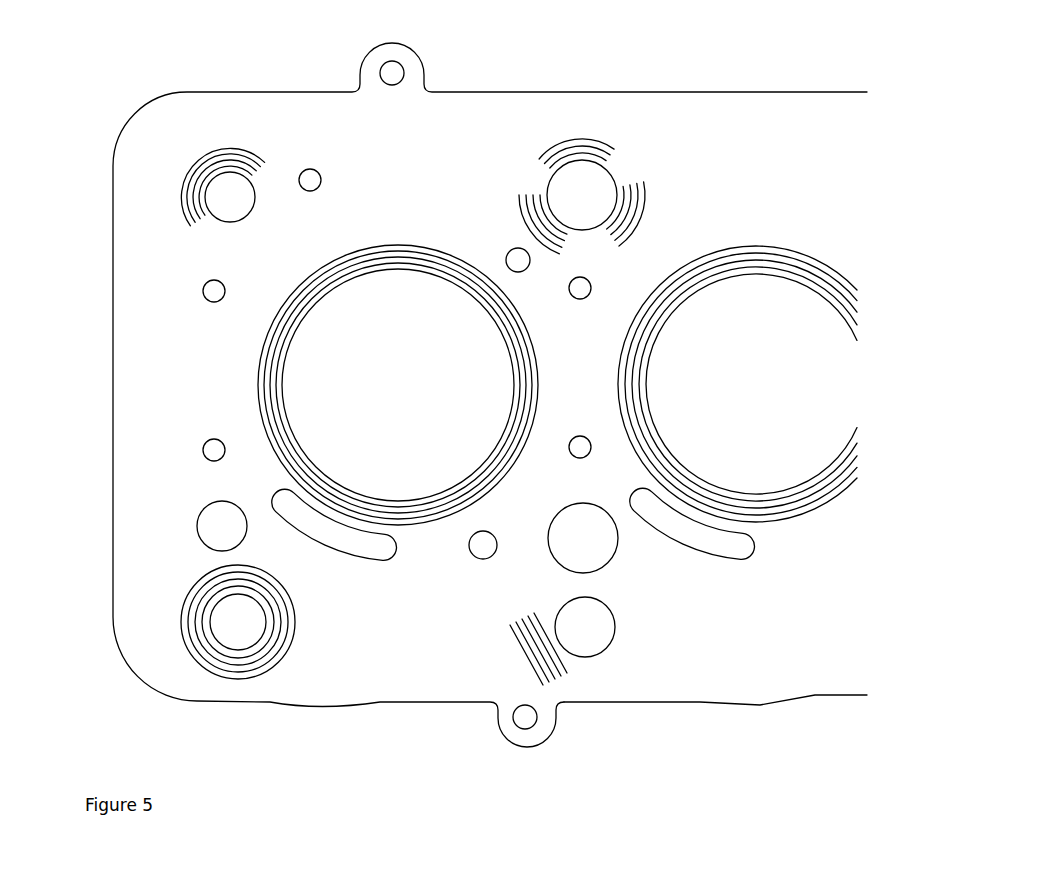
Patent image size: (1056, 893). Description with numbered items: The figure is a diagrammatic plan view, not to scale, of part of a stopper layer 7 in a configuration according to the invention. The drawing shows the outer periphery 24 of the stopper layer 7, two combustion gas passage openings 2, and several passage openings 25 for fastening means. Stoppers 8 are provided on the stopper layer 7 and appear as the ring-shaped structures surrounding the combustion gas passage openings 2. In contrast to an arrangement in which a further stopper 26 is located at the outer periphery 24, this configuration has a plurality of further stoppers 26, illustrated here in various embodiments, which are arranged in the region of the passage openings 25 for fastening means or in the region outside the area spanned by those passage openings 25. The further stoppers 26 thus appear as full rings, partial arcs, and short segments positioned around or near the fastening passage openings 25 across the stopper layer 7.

The combustion gas passage opening 2 is at (440, 393).
The stopper layer 7 is at (390, 617).
The stopper 8 is at (263, 332).
The outer periphery 24 is at (826, 695).
The passage opening for fastening means 25 is at (230, 197).
The further stopper 26 is at (205, 165).